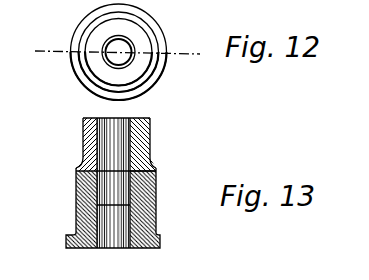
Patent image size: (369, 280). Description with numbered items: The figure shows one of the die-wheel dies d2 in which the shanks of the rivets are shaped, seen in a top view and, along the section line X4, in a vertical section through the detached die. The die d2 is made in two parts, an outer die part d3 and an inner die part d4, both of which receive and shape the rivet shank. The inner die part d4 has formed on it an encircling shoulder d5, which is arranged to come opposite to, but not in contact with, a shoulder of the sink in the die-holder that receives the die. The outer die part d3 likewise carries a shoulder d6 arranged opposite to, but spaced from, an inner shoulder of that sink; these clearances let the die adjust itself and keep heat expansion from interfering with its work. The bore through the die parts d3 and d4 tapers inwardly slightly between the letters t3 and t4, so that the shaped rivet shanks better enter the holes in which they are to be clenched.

In FIG. 12, the section line x4 x4 X4 is at (115, 52).
In FIG. 12, the die d2 is at (155, 80).
In FIG. 13, the die d2 is at (177, 198).
In FIG. 13, the outer die part d3 is at (84, 150).
In FIG. 13, the inner die part d4 is at (163, 148).
In FIG. 13, the encircling shoulder d5 is at (177, 233).
In FIG. 13, the shoulder d6 is at (82, 158).
In FIG. 13, the upper taper limit t3 is at (116, 107).
In FIG. 13, the lower taper limit t4 is at (130, 205).